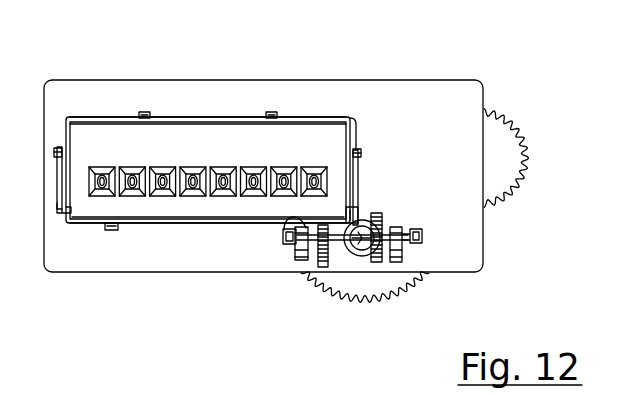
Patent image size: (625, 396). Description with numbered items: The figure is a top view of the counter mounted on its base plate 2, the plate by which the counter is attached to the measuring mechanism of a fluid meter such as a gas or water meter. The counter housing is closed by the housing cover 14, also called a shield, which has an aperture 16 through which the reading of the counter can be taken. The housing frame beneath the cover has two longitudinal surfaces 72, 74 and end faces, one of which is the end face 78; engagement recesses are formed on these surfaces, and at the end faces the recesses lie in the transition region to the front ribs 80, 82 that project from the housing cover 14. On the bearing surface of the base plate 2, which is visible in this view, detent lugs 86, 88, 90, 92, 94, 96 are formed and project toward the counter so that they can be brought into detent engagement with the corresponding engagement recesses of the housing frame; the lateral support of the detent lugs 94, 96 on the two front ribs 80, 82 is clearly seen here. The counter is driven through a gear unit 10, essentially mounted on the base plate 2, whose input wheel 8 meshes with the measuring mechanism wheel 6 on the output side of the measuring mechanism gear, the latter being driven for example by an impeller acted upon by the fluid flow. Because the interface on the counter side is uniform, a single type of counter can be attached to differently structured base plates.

The base plate 2 is at (427, 103).
The measuring mechanism wheel 6 is at (515, 137).
The input wheel 8 is at (405, 283).
The gear unit 10 is at (348, 258).
The housing cover 14 is at (218, 147).
The aperture 16 is at (165, 200).
The longitudinal surface 72 is at (211, 226).
The longitudinal surface 74 is at (315, 118).
The end face 78 is at (356, 133).
The front rib 80 is at (359, 181).
The front rib 82 is at (57, 180).
The detent lug 86 is at (113, 232).
The detent lug 88 is at (286, 230).
The detent lug 90 is at (146, 111).
The detent lug 92 is at (274, 111).
The detent lug 94 is at (361, 153).
The detent lug 96 is at (58, 147).